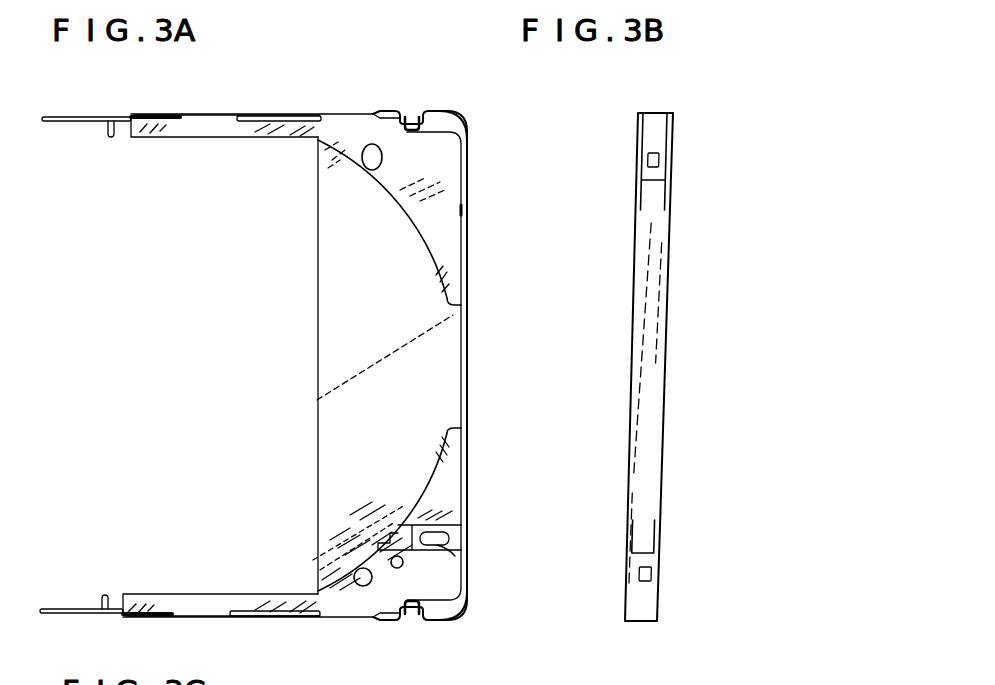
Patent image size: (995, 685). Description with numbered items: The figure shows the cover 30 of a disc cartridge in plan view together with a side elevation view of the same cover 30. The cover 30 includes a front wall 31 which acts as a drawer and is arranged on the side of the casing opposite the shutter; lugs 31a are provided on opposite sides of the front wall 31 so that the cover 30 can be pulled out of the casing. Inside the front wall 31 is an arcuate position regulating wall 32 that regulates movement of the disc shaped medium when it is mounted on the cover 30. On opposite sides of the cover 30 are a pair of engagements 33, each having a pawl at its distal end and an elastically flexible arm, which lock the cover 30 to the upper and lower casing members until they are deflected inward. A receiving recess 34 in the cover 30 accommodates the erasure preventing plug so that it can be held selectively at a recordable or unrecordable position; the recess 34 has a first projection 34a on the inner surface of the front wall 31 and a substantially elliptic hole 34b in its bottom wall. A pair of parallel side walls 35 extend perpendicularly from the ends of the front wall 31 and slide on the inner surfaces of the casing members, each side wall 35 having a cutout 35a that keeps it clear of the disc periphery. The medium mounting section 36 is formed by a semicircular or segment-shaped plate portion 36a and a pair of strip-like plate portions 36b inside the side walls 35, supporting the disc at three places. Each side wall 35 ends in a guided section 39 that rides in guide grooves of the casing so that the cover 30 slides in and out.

In FIG. 3A, the cover 30 is at (271, 108).
In FIG. 3B, the cover 30 is at (711, 223).
In FIG. 3A, the front wall 31 is at (468, 395).
In FIG. 3B, the front wall 31 is at (673, 367).
In FIG. 3A, the lugs 31a is at (483, 90).
In FIG. 3B, the lugs 31a is at (667, 373).
In FIG. 3A, the position regulating wall 32 is at (400, 208).
In FIG. 3A, the engagements 33 is at (400, 112).
In FIG. 3A, the receiving recess 34 is at (440, 520).
In FIG. 3A, the first projection 34a is at (457, 537).
In FIG. 3A, the hole 34b is at (437, 545).
In FIG. 3A, the side walls 35 is at (150, 117).
In FIG. 3A, the cutout 35a is at (214, 122).
In FIG. 3A, the medium mounting section 36 is at (353, 368).
In FIG. 3A, the plate portion 36a is at (333, 302).
In FIG. 3A, the strip-like plate portions 36b is at (219, 124).
In FIG. 3A, the guided section 39 is at (73, 123).